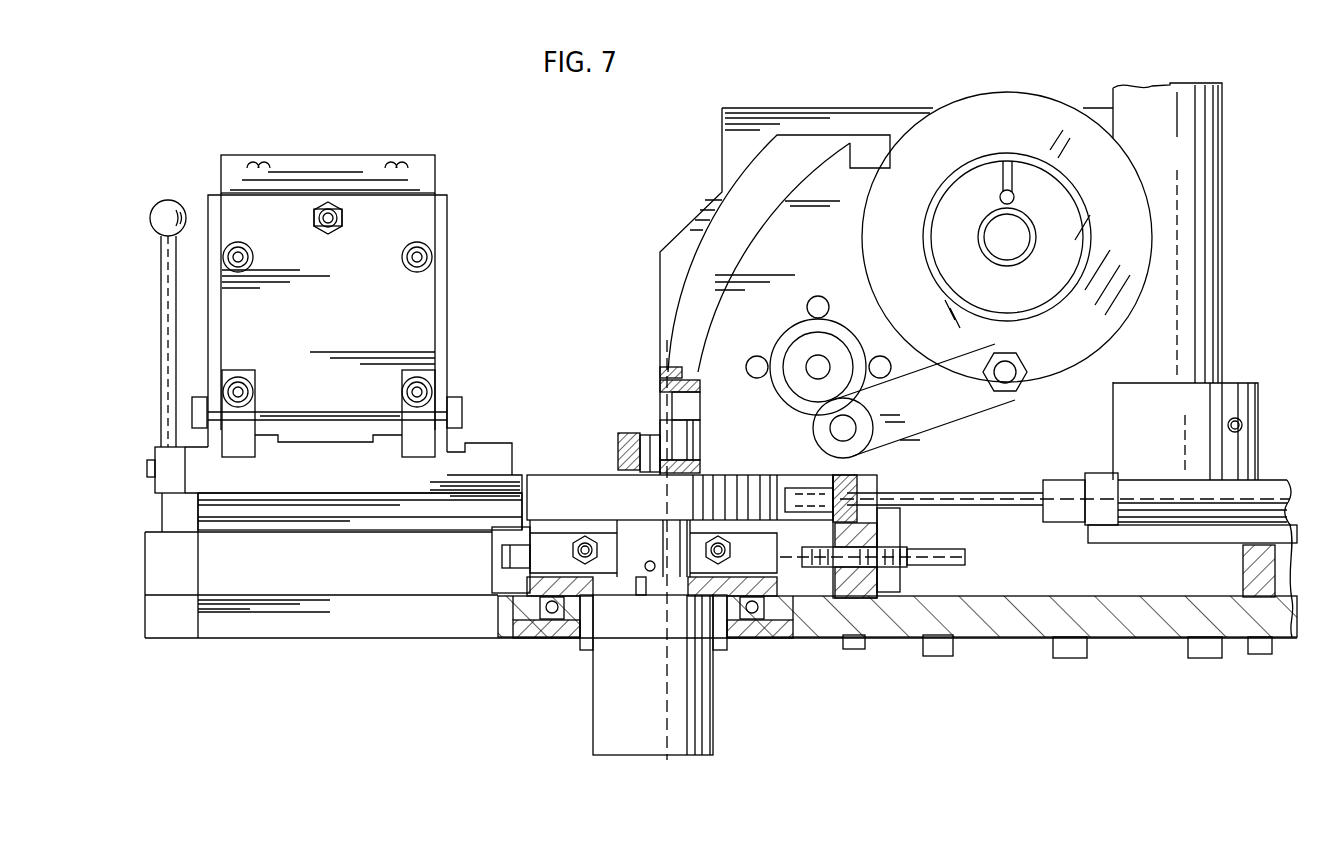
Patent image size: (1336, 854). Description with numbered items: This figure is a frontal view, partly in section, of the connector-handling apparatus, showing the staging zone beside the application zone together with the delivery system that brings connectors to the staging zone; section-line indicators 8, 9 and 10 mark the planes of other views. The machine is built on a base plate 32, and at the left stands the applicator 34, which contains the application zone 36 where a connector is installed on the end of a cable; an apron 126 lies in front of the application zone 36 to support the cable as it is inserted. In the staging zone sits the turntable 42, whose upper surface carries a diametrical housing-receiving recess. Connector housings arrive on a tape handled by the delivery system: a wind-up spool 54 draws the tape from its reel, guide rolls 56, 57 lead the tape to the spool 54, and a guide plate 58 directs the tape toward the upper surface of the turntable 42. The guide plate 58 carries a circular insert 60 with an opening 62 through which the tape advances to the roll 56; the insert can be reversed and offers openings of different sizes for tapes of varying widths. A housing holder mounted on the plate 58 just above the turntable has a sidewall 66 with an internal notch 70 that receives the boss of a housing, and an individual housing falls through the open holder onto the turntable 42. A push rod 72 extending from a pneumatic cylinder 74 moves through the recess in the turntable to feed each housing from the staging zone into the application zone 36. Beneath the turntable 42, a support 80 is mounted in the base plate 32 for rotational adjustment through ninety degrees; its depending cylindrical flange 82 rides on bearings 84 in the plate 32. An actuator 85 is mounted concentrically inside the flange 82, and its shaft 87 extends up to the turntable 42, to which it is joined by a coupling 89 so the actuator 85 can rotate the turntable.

The section line 8- 8 is at (1233, 83).
The section line 9- 9 is at (328, 598).
The section line 10- 10 is at (990, 566).
The base plate 32 is at (437, 624).
The applicator 34 is at (360, 165).
The application zone 36 is at (456, 442).
The turntable 42 is at (577, 470).
The wind-up spool 54 is at (1082, 123).
The guide roll 56 is at (823, 343).
The guide roll 57 is at (812, 418).
The guide plate 58 is at (685, 300).
The circular insert 60 is at (690, 385).
The opening 62 is at (660, 410).
The sidewall 66 is at (618, 450).
The notch 70 is at (640, 435).
The push rod 72 is at (821, 492).
The pneumatic cylinder 74 is at (1158, 492).
The support 80 is at (498, 598).
The cylindrical flange 82 is at (577, 650).
The bearings 84 is at (752, 615).
The actuator 85 is at (700, 705).
The shaft 87 is at (655, 590).
The coupling 89 is at (638, 587).
The apron 126 is at (346, 522).